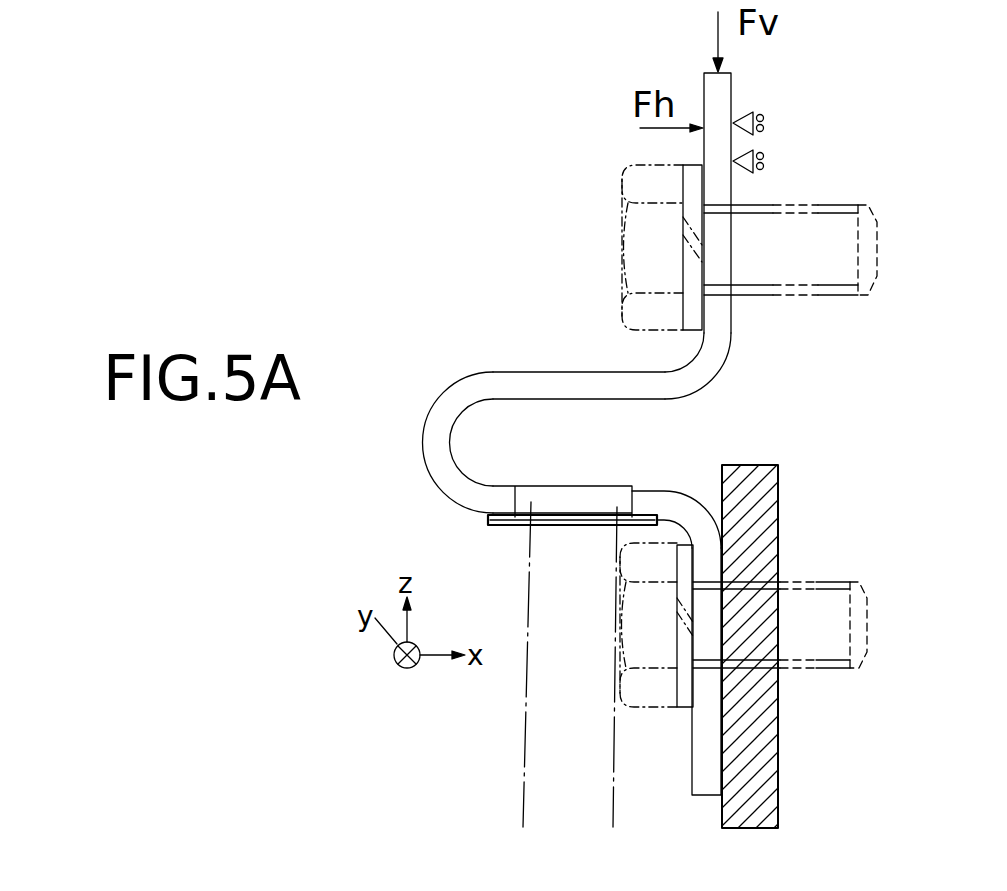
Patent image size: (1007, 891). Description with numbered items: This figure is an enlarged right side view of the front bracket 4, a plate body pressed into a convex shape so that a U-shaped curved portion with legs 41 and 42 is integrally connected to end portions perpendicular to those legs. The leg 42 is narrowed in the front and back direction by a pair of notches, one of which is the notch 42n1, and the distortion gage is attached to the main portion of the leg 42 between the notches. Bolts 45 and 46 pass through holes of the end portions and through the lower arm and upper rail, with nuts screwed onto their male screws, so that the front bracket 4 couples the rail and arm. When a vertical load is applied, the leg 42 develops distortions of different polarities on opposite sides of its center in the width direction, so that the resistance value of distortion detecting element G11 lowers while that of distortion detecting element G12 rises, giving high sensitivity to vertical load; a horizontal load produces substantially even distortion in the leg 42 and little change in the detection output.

The front bracket 4 is at (492, 272).
The leg 41 is at (497, 373).
The leg 42 is at (487, 486).
The notch 42n1 is at (625, 492).
The bolt 45 is at (622, 243).
The bolt 46 is at (615, 615).
The distortion detecting element G11 is at (610, 527).
The distortion detecting element G12 is at (517, 527).